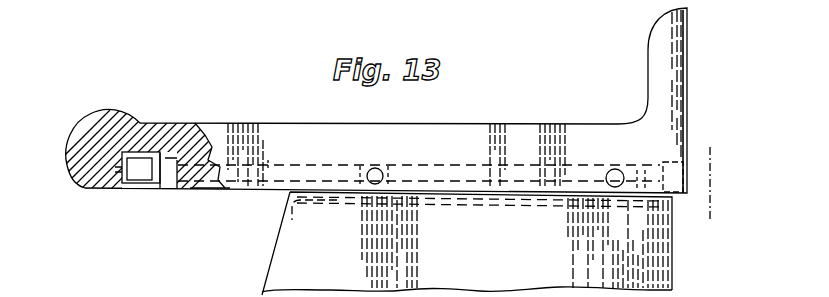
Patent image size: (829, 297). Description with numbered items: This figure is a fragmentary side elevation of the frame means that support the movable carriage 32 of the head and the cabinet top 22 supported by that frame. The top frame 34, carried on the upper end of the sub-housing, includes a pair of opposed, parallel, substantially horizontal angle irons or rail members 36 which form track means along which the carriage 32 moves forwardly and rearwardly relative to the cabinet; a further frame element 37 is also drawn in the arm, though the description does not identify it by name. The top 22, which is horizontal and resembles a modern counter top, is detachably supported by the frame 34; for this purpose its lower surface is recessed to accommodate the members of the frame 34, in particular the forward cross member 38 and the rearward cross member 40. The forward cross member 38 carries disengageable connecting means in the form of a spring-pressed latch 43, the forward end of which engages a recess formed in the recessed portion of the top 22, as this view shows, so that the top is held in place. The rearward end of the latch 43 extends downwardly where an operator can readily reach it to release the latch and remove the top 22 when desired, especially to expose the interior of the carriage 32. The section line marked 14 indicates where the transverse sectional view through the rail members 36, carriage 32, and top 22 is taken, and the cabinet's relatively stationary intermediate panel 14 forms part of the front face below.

The top 22 is at (530, 130).
The carriage 32 is at (270, 266).
The top frame 34 is at (197, 195).
The rail members 36 is at (275, 163).
The pin 37 is at (370, 165).
The forward cross member 38 is at (141, 157).
The rearward cross member 40 is at (674, 162).
The spring-pressed latch 43 is at (177, 160).
The intermediate panel 14 is at (690, 153).